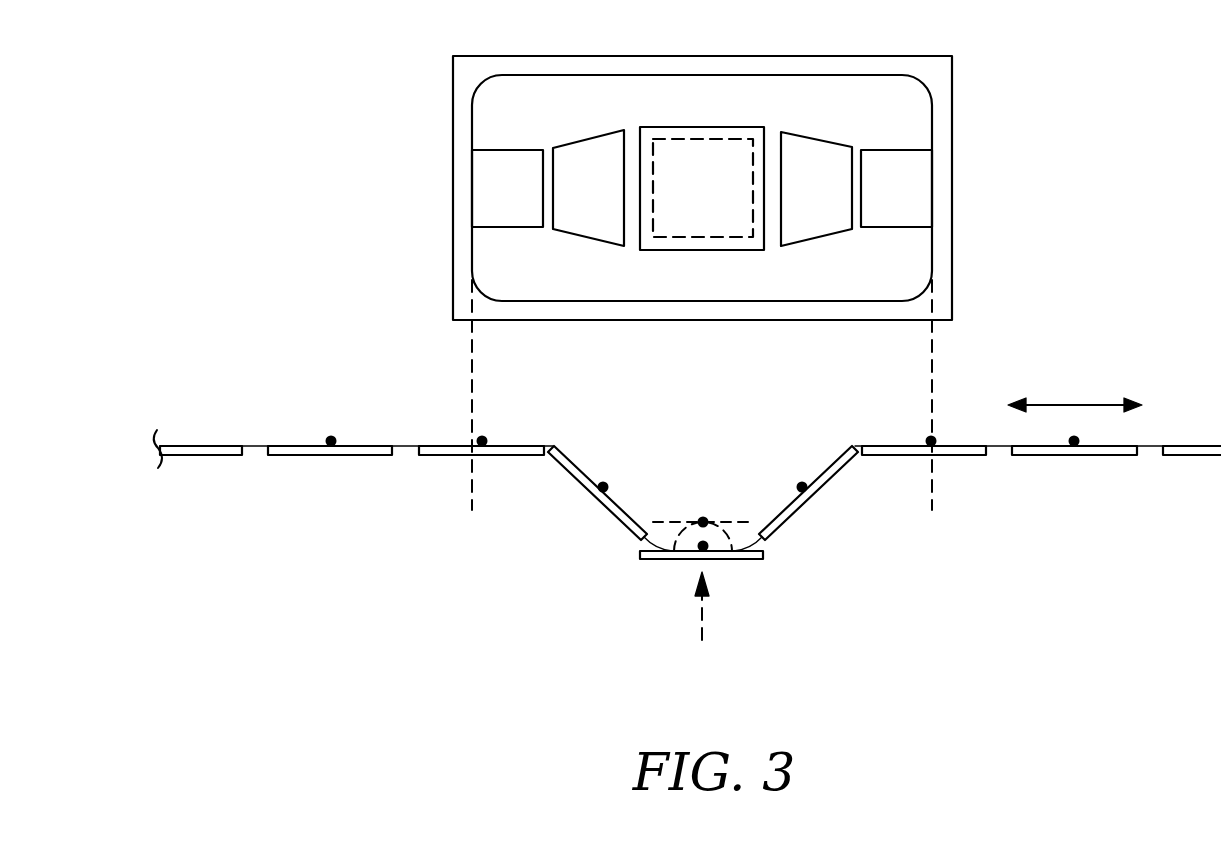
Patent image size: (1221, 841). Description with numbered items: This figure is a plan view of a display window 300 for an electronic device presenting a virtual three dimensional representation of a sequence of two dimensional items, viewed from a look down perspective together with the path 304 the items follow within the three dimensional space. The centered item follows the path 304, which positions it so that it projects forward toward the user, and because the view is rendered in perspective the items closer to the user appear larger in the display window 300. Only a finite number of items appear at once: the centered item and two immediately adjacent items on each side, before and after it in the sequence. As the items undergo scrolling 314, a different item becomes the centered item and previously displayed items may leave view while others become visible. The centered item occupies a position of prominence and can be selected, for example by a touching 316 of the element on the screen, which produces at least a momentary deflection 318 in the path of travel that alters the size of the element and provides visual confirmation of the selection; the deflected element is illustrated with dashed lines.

The display window 300 is at (886, 92).
The path 304 is at (664, 544).
The scrolling 314 is at (1075, 405).
The touching 316 is at (705, 620).
The momentary deflection 318 is at (735, 548).